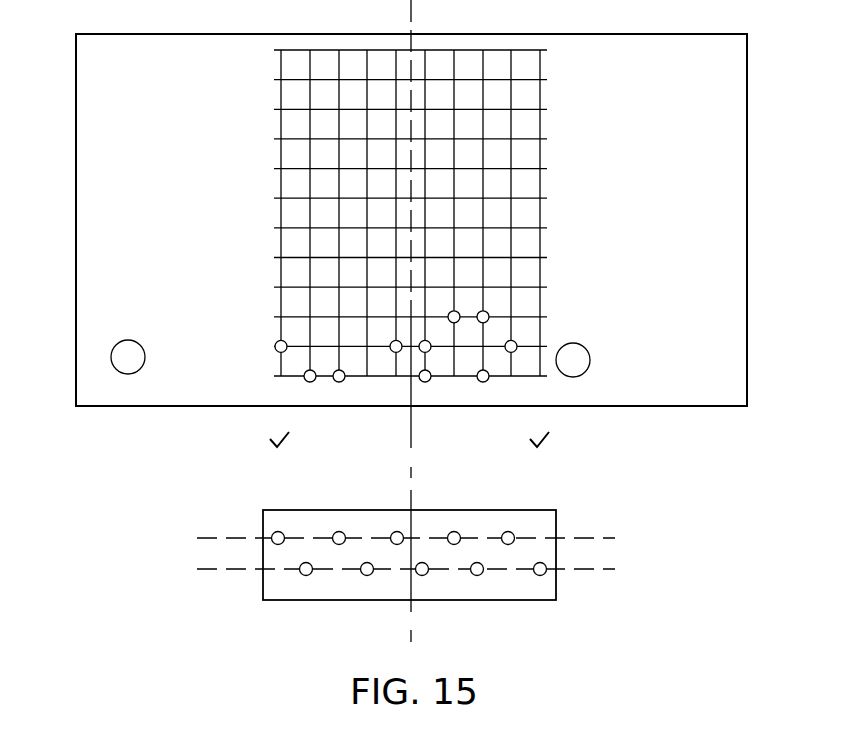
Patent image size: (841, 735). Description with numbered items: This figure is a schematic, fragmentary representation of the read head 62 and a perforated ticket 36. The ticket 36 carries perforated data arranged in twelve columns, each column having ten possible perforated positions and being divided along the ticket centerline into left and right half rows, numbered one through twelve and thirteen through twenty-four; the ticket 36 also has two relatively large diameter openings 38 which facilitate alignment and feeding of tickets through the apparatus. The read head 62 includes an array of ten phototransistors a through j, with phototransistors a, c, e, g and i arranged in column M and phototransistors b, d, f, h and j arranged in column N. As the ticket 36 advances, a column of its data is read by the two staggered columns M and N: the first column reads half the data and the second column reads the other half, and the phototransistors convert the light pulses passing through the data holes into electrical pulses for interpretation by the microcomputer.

The ticket 36 is at (590, 47).
The openings 38 is at (127, 366).
The read head 62 is at (561, 597).